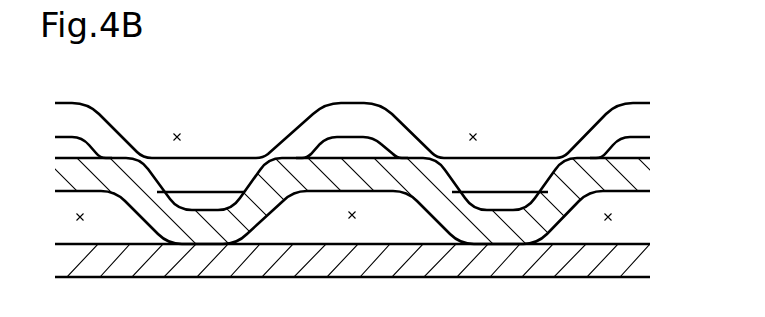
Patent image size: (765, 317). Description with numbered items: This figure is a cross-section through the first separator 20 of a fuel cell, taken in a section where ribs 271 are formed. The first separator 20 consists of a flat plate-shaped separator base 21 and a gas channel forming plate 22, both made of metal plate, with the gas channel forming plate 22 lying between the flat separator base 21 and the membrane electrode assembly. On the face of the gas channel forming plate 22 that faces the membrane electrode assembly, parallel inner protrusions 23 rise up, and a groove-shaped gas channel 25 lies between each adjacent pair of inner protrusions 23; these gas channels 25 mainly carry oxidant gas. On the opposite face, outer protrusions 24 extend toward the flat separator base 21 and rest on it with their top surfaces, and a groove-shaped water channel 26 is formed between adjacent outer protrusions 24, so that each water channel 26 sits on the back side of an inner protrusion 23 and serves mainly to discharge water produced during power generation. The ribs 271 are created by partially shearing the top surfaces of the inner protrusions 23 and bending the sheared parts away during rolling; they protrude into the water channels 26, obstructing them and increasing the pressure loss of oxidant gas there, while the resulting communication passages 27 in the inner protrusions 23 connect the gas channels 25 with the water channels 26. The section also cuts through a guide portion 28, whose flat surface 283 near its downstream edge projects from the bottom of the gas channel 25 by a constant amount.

The first separator 20 is at (399, 208).
The flat separator base 21 is at (630, 244).
The gas channel forming plate 22 is at (638, 139).
The inner protrusion 23 is at (68, 102).
The outer protrusion 24 is at (201, 247).
The gas channel 25 is at (177, 133).
The water channel 26 is at (82, 222).
The communication passage 27 is at (87, 120).
The rib 271 is at (100, 153).
The guide portion 28 is at (367, 135).
The flat surface 283 is at (226, 156).